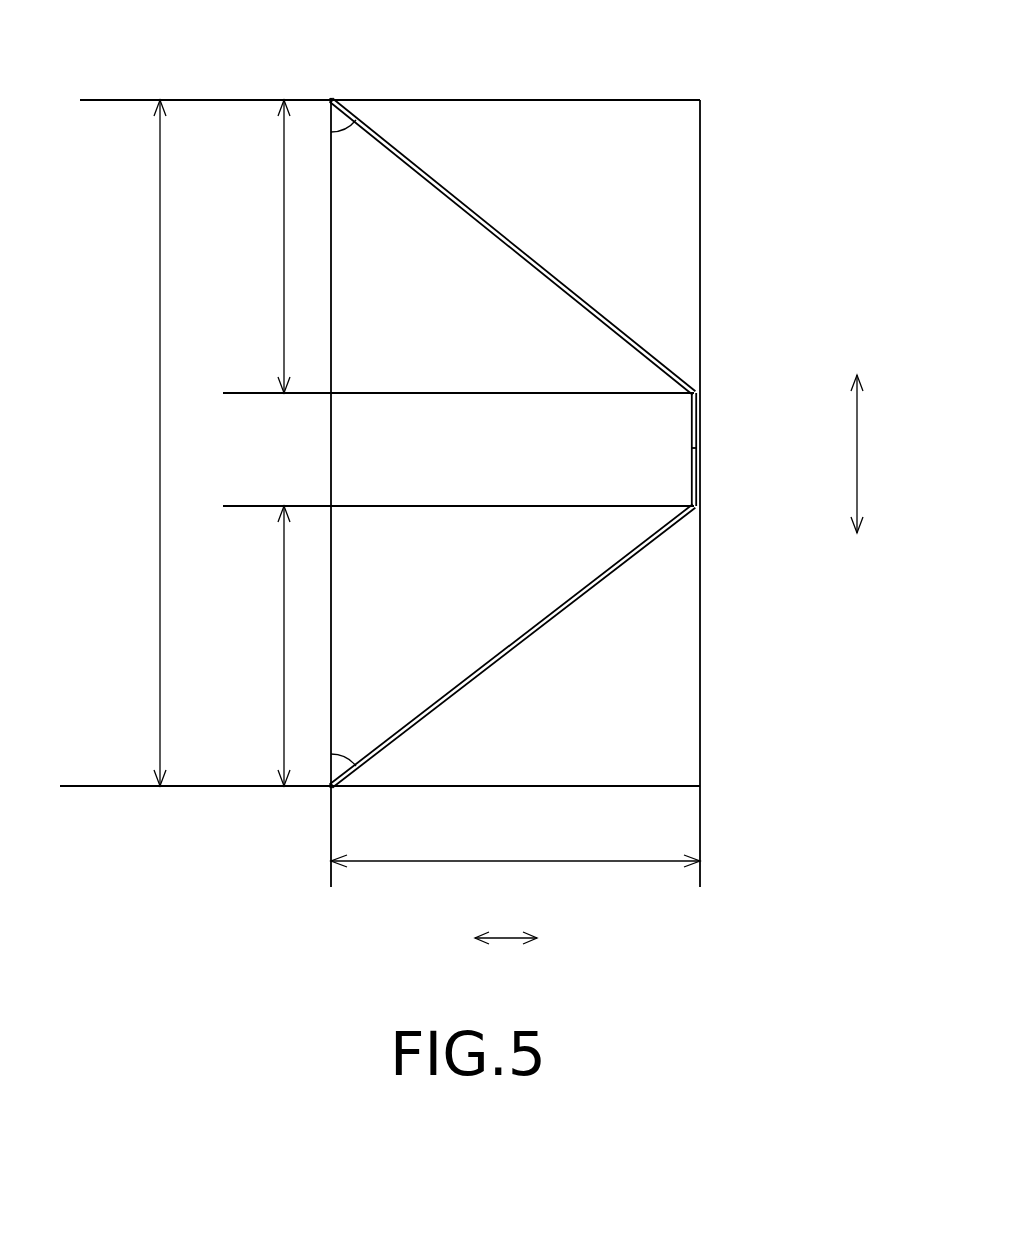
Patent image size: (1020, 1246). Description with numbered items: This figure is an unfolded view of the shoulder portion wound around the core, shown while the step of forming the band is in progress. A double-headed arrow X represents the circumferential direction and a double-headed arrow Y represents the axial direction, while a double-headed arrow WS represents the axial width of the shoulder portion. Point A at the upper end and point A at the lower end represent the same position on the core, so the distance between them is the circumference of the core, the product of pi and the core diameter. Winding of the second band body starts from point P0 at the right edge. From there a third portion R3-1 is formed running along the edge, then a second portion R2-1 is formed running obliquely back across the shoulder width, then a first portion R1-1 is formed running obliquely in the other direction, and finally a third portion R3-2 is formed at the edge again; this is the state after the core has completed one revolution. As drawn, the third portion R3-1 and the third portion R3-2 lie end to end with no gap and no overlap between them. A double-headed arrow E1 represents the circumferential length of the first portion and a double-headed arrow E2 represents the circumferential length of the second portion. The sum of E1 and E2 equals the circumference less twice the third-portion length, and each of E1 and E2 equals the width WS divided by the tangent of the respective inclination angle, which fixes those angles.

The point A is at (331, 100).
The first portion R1-1 is at (418, 162).
The second portion R2-1 is at (489, 662).
The third portion R3-1 is at (697, 480).
The third portion R3-2 is at (697, 420).
The winding start point P0 is at (697, 448).
The circumferential length of the first portion E1 is at (256, 246).
The circumferential length of the second portion E2 is at (256, 646).
The circumferential direction X is at (866, 454).
The axial width of the shoulder portion WS is at (515, 878).
The axial direction Y is at (506, 952).